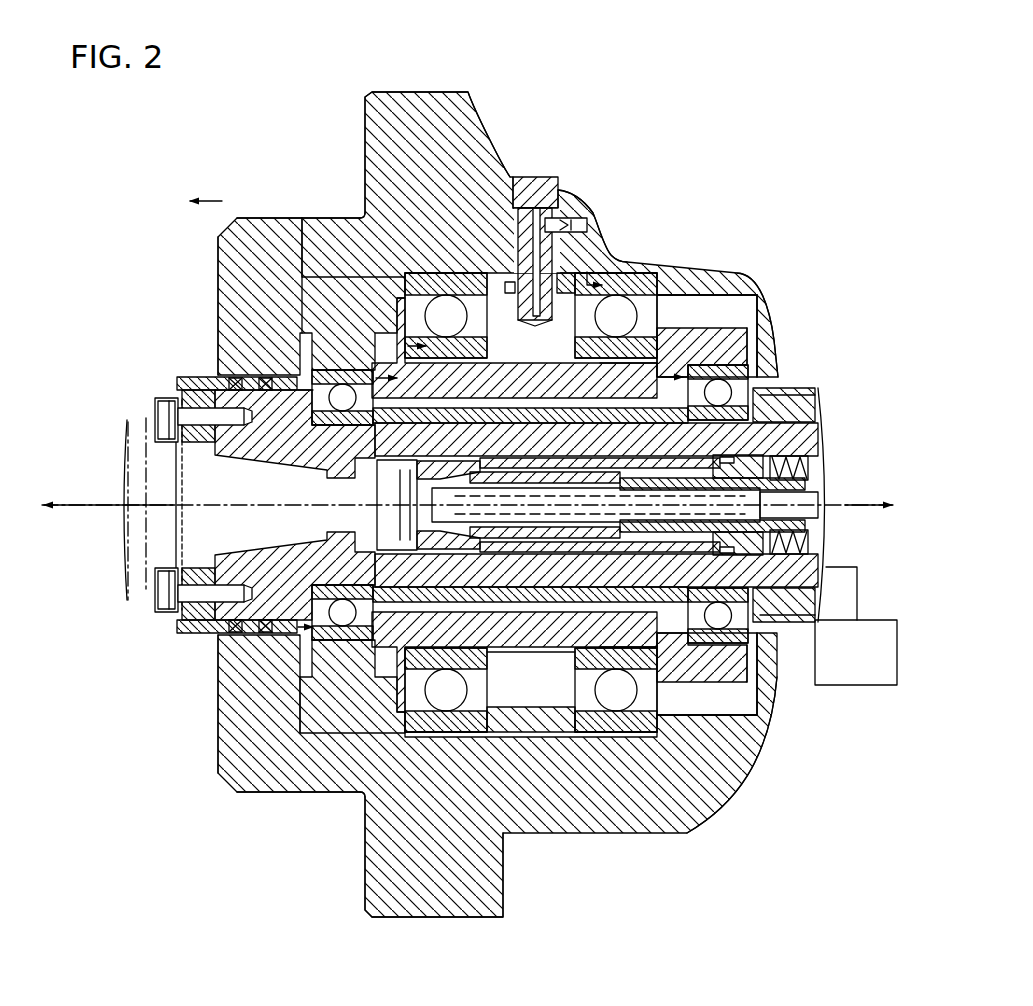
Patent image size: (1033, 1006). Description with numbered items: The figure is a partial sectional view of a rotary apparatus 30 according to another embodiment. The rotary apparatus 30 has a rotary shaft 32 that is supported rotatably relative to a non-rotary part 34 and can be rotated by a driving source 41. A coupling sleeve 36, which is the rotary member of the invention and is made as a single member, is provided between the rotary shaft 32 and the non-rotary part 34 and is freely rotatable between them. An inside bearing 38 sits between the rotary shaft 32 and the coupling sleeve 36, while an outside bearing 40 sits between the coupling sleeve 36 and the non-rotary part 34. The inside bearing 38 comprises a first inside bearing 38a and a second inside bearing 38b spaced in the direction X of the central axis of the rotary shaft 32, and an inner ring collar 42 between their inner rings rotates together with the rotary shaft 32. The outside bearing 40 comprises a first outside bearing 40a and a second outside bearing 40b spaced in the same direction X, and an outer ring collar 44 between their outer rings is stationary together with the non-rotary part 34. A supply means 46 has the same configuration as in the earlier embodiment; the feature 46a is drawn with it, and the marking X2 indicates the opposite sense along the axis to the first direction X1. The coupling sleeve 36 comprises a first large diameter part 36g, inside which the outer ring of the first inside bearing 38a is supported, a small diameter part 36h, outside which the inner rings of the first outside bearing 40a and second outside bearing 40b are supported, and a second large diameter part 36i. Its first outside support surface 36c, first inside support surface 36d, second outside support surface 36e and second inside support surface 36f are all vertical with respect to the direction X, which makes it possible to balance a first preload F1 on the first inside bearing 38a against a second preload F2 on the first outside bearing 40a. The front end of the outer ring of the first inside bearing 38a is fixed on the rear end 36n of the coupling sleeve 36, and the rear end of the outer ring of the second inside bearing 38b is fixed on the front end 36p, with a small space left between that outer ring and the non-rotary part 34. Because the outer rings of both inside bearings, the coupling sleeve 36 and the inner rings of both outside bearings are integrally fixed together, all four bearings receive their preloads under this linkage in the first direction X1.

The rotary apparatus 30 is at (727, 188).
The rotary shaft 32 is at (193, 368).
The non-rotary part 34 is at (378, 120).
The coupling sleeve 36 is at (728, 318).
The first outside support surface 36c is at (714, 322).
The first inside support surface 36d is at (735, 332).
The second outside support surface 36e is at (365, 205).
The second inside support surface 36f is at (305, 258).
The first large diameter part 36g is at (717, 338).
The small diameter part 36h is at (628, 372).
The second large diameter part 36i is at (347, 220).
The rear end of the coupling sleeve 36n is at (752, 356).
The front end of the coupling sleeve 36p is at (292, 306).
The inside bearing 38 is at (760, 375).
The first inside bearing 38a is at (750, 348).
The second inside bearing 38b is at (305, 350).
The outside bearing 40 is at (634, 256).
The first outside bearing 40a is at (622, 280).
The second outside bearing 40b is at (432, 278).
The driving source 41 is at (857, 686).
The inner ring collar 42 is at (499, 400).
The outer ring collar 44 is at (557, 328).
The supply means 46 is at (540, 172).
The bolt hole curved surface 46a is at (568, 210).
The first preload F1 is at (529, 369).
The second preload F2 is at (589, 266).
The direction of the central axis X is at (113, 513).
The first direction X1 is at (866, 504).
The direction X2 is at (73, 503).